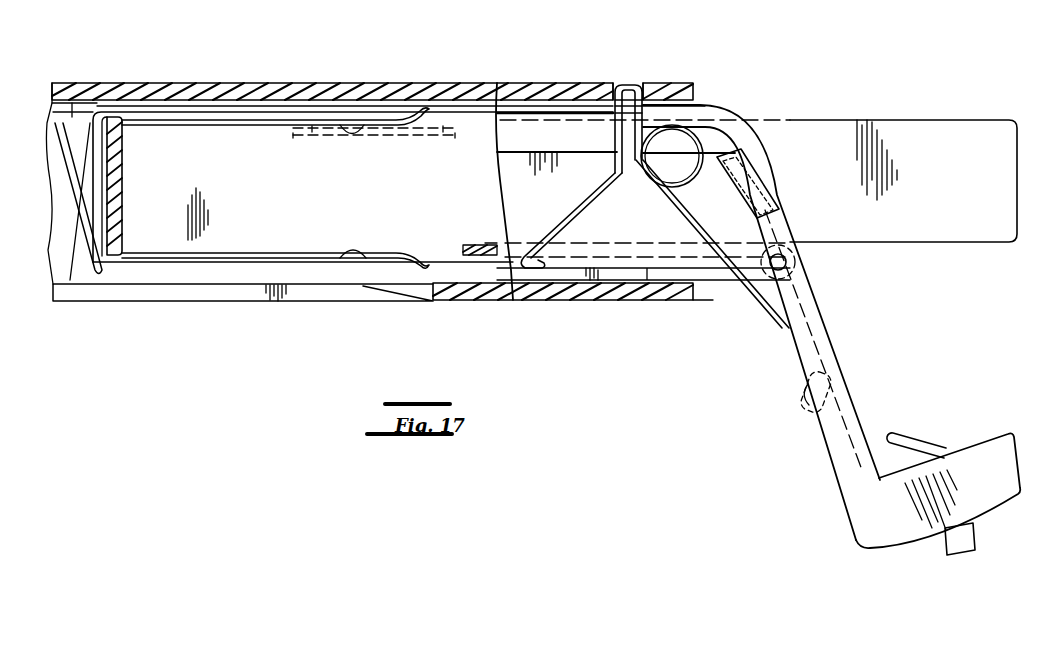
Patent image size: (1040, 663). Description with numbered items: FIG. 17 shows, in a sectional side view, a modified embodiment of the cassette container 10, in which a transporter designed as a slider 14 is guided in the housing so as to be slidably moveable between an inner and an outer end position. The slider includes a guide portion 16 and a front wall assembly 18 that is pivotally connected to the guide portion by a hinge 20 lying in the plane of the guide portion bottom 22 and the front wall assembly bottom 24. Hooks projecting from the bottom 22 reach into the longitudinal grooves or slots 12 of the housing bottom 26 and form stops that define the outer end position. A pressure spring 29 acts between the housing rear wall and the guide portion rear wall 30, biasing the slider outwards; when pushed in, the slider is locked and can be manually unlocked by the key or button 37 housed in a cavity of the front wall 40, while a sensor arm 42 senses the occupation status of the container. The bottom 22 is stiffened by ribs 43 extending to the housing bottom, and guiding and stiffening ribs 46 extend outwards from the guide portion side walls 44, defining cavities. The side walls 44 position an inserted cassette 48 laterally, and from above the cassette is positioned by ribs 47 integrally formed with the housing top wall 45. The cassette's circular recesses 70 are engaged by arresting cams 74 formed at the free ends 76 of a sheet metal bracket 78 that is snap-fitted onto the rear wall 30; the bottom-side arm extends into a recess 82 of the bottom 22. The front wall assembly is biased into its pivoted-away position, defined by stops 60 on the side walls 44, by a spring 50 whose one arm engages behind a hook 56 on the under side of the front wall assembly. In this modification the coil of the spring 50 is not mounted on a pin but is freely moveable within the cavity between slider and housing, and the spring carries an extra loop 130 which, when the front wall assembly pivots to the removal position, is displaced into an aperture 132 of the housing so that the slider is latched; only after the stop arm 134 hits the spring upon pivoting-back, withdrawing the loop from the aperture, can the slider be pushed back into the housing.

The housing assembly 10 is at (137, 79).
The longitudinal grooves or slots 12 is at (237, 300).
The slider 14 is at (826, 518).
The guide portion 16 is at (712, 301).
The front wall assembly 18 is at (814, 439).
The hinge 20 is at (786, 263).
The bottom of guide portion 22 is at (489, 245).
The front wall assembly bottom 24 is at (840, 340).
The lower hatched wall 26 is at (420, 299).
The pressure spring 29 is at (96, 277).
The guide portion rear wall 30 is at (116, 185).
The key or button 37 is at (965, 546).
The front wall 40 is at (1005, 496).
The sensor arm 42 is at (913, 440).
The ribs 43 is at (80, 278).
The guide portion side walls 44 is at (512, 183).
The top wall of the housing 45 is at (290, 83).
The guiding and stiffening ribs 46 is at (575, 276).
The ribs 47 is at (73, 117).
The cassette 48 is at (197, 130).
The spring 50 is at (760, 302).
The hook 56 is at (813, 400).
The stops 60 is at (750, 163).
The circular depressions or recesses 70 is at (403, 125).
The arresting cams 74 is at (352, 131).
The free ends of sheet metal bracket 76 is at (259, 118).
The sheet metal bracket 78 is at (183, 270).
The recess 82 is at (460, 249).
The extra loop 130 is at (636, 90).
The aperture 132 is at (614, 86).
The stop arm 134 is at (737, 178).